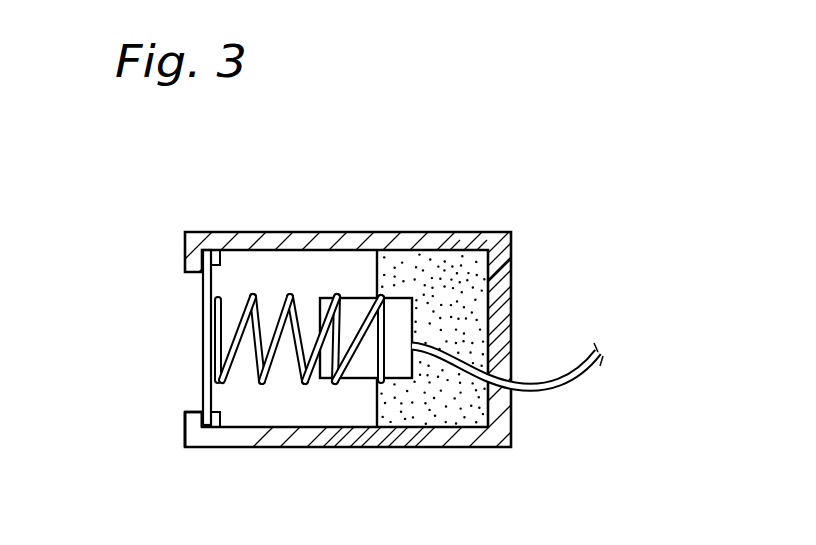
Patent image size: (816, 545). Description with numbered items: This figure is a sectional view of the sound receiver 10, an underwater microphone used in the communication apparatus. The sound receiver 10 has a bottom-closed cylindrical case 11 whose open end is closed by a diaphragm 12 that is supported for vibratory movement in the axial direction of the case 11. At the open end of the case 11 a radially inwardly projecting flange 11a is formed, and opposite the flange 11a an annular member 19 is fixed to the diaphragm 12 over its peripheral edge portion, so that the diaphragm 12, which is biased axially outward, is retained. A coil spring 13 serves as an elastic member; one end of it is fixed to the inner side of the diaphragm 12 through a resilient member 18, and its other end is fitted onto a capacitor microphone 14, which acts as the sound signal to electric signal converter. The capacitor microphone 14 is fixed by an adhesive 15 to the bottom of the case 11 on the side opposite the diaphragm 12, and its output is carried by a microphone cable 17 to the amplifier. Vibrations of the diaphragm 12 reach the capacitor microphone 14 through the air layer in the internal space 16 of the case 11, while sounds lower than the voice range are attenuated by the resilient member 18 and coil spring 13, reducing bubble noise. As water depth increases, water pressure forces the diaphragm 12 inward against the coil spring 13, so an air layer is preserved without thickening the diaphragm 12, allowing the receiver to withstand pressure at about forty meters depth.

The sound receiver 10 is at (163, 227).
The bottom-closed cylindrical case 11 is at (503, 265).
The flange 11a is at (190, 425).
The diaphragm 12 is at (202, 333).
The coil spring 13 is at (280, 360).
The capacitor microphone 14 is at (398, 363).
The adhesive 15 is at (440, 258).
The internal space 16 is at (330, 267).
The microphone cable 17 is at (549, 392).
The resilient member 18 is at (222, 303).
The annular member 19 is at (215, 413).